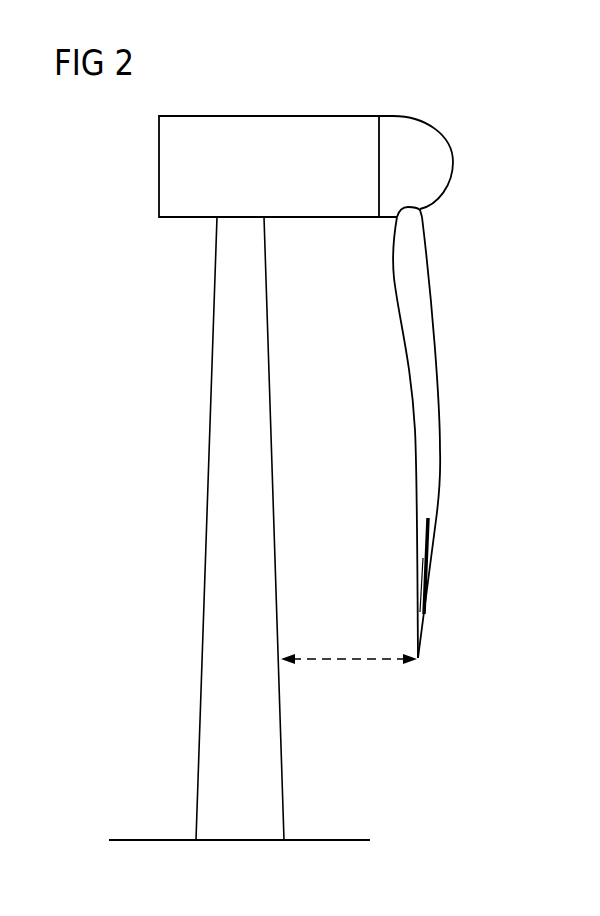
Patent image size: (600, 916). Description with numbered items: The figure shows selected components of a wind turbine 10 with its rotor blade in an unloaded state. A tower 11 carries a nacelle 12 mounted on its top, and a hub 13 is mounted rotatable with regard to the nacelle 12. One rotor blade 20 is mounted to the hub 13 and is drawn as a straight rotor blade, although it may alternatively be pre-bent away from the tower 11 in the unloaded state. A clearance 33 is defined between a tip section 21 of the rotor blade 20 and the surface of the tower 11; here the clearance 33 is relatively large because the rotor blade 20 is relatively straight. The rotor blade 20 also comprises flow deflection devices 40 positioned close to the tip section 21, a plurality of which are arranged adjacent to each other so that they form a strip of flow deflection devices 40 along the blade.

The wind turbine 10 is at (112, 356).
The tower 11 is at (214, 557).
The nacelle 12 is at (171, 160).
The hub 13 is at (446, 165).
The rotor blade 20 is at (425, 340).
The tip section 21 is at (421, 661).
The clearance 33 is at (355, 657).
The flow deflection devices 40 is at (427, 570).